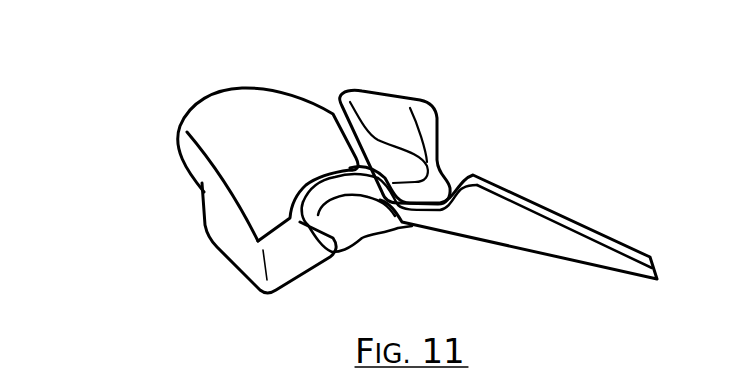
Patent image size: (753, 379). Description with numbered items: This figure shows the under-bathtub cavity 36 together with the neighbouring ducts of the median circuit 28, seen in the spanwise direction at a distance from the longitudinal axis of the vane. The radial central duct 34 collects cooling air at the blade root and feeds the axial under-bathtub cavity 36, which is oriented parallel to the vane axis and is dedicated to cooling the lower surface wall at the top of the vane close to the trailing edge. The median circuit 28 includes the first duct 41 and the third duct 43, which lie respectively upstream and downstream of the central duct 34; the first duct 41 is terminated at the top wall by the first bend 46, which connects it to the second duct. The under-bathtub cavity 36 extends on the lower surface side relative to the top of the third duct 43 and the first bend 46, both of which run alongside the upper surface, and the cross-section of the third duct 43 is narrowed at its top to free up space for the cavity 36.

The median circuit 28 is at (157, 171).
The radial central duct 34 is at (358, 232).
The under-bathtub cavity 36 is at (493, 215).
The first duct 41 is at (234, 238).
The third duct 43 is at (390, 112).
The first bend 46 is at (210, 108).